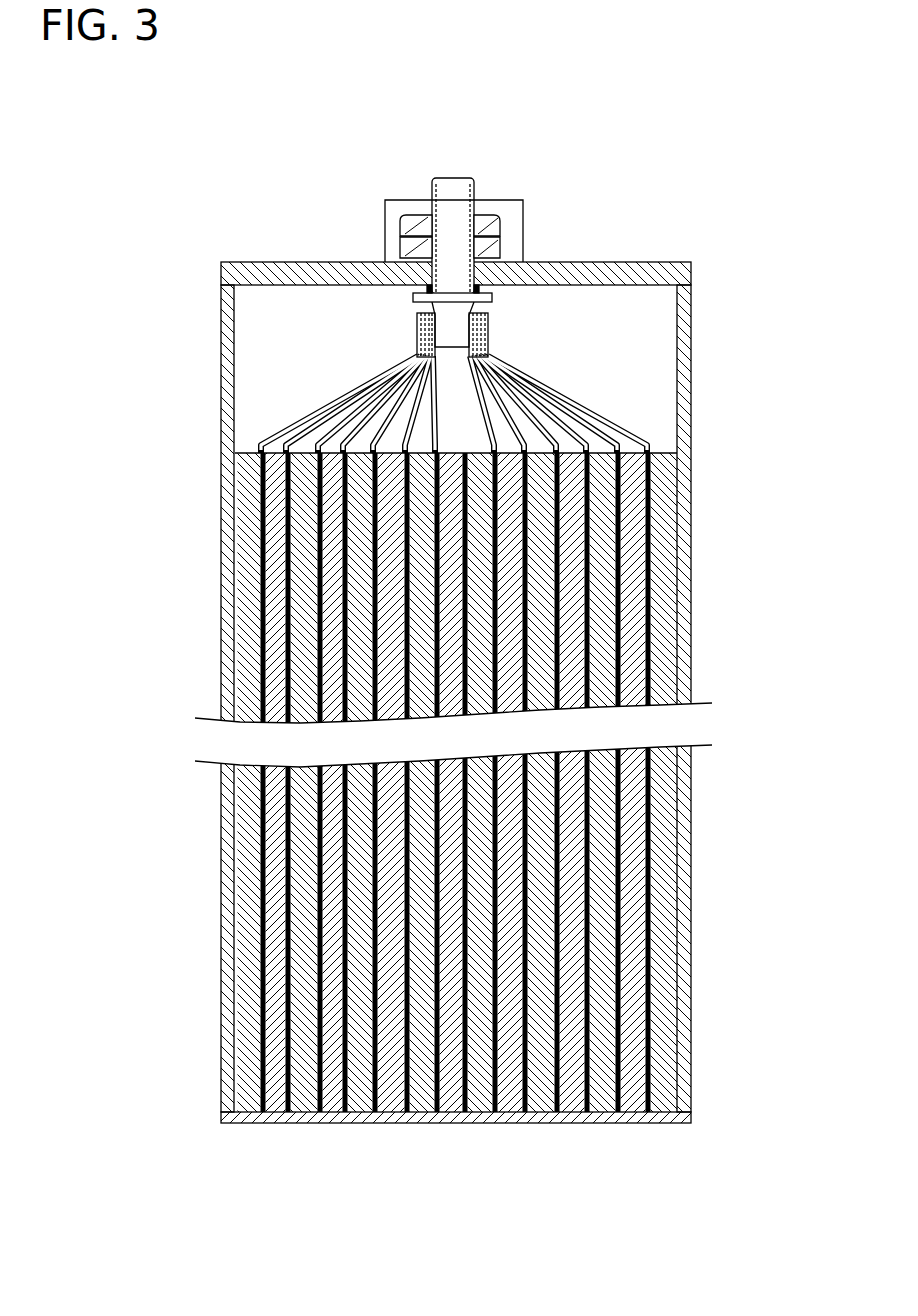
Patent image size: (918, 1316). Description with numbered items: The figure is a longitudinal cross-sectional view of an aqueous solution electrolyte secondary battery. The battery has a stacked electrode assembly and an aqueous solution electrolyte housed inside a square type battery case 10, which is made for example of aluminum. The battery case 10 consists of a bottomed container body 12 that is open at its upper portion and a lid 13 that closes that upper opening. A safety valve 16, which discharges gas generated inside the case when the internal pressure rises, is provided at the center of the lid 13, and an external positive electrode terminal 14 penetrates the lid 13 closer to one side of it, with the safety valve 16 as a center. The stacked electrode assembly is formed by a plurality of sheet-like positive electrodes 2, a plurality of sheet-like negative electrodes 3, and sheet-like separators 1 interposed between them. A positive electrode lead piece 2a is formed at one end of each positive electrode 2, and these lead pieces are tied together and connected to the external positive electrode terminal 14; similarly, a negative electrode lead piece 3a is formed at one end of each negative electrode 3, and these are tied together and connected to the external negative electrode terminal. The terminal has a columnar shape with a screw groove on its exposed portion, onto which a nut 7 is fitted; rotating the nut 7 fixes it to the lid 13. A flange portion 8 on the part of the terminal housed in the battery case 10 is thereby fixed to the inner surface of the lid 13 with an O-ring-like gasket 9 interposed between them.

The separator 1 is at (447, 782).
The positive electrode 2 is at (446, 782).
The negative electrode 3 is at (442, 782).
The positive electrode lead piece 2a is at (442, 386).
The negative electrode lead piece 3a is at (447, 379).
The nut 7 is at (444, 202).
The flange portion 8 is at (426, 258).
The gasket 9 is at (491, 253).
The battery case 10 is at (445, 630).
The container body 12 is at (445, 648).
The lid 13 is at (220, 160).
The external positive electrode terminal 14 is at (471, 234).
The safety valve 16 is at (486, 212).